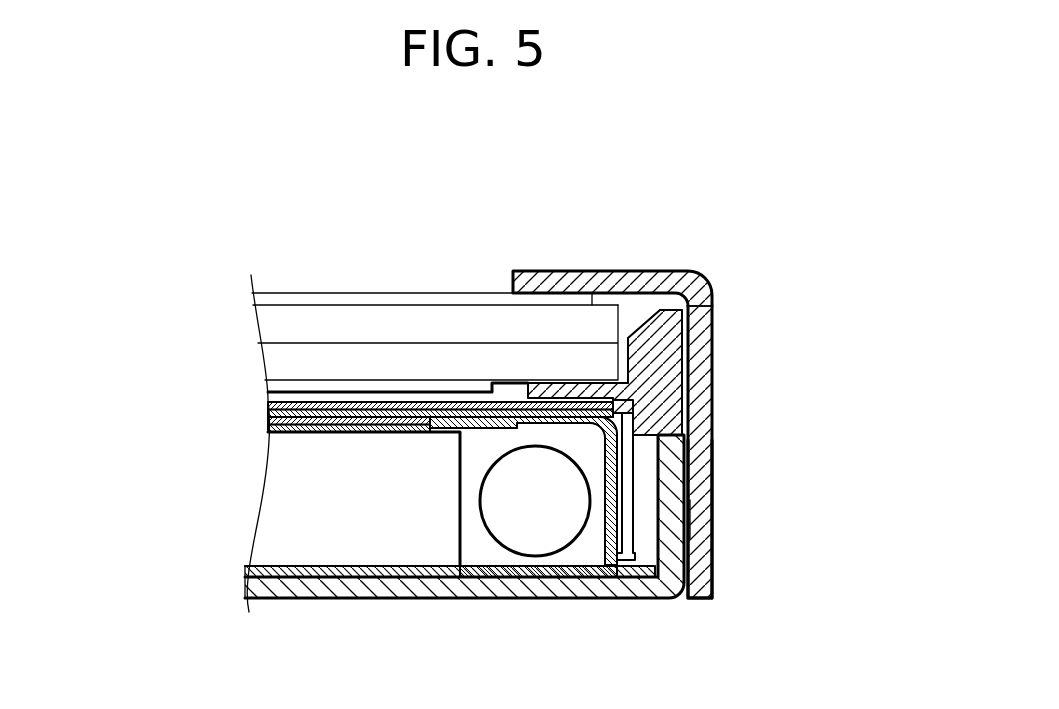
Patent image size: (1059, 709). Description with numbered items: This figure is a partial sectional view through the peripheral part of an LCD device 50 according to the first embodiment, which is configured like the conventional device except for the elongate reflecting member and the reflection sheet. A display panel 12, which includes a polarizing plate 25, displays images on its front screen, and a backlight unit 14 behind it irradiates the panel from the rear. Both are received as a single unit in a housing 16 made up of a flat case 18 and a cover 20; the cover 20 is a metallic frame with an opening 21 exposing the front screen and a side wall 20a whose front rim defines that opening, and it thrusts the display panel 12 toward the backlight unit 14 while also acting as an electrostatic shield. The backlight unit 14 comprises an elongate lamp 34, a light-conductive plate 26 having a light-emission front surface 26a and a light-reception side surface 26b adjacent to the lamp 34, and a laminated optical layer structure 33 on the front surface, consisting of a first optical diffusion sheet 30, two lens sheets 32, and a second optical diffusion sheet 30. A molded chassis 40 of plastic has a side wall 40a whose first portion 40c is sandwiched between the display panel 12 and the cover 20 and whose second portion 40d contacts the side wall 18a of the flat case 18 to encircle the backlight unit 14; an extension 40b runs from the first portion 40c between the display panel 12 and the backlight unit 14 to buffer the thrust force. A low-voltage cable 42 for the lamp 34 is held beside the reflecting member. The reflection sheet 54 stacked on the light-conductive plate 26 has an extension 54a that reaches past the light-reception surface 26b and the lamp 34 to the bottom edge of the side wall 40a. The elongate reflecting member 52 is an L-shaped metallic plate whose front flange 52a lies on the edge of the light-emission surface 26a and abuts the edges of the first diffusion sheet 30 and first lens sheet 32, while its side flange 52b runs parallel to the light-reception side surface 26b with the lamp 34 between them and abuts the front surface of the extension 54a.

The LCD device 50 is at (538, 193).
The display panel 12 is at (221, 305).
The opening 21 is at (370, 283).
The polarizing plate 25 is at (438, 295).
The backlight unit 14 is at (121, 390).
The housing 16 is at (812, 590).
The flat case 18 is at (629, 601).
The side wall of the flat case 18a is at (711, 553).
The cover 20 is at (713, 577).
The side wall of the cover 20a is at (697, 517).
The light-conductive plate 26 is at (270, 505).
The light-emission front surface 26a is at (297, 435).
The light-reception side surface 26b is at (487, 577).
The optical diffusion sheet 30 is at (268, 405).
The lens sheet 32 is at (268, 413).
The laminated optical layer structure 33 is at (171, 390).
The elongate lamp 34 is at (481, 503).
The molded chassis 40 is at (861, 225).
The side wall of the molded chassis 40a is at (789, 278).
The extension of the molded chassis 40b is at (558, 388).
The first portion of the side wall 40c is at (695, 306).
The second portion of the side wall 40d is at (713, 415).
The low-voltage cable 42 is at (636, 485).
The elongate reflecting member 52 is at (493, 438).
The front flange 52a is at (462, 433).
The side flange 52b is at (488, 565).
The reflection sheet 54 is at (247, 572).
The extension of the reflection sheet 54a is at (533, 577).